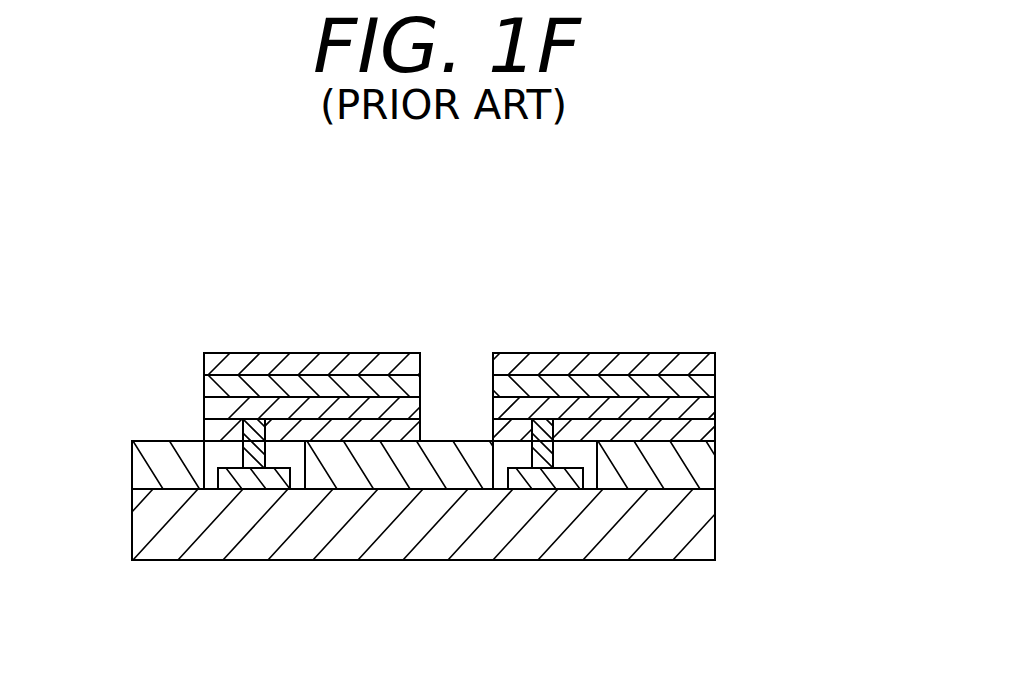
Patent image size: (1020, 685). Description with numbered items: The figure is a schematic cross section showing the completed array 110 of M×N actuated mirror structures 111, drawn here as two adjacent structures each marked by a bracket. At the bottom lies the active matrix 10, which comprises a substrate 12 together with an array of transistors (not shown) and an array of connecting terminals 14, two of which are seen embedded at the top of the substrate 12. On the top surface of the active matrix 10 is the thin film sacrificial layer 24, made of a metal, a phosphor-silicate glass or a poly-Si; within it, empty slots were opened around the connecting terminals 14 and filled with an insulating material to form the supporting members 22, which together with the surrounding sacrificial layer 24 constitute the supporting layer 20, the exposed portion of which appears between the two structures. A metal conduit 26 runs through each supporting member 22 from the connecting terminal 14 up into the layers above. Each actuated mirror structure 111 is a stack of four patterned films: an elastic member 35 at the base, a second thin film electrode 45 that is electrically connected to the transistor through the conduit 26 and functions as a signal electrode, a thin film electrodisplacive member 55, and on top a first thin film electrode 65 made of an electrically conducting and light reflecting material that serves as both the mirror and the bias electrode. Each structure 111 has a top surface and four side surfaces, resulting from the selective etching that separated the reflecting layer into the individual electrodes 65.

The array of actuated mirror structures 110 is at (760, 187).
The actuated mirror structure 111 is at (420, 232).
The active matrix 10 is at (118, 472).
The substrate 12 is at (382, 547).
The connecting terminal 14 is at (258, 482).
The supporting layer 20 is at (433, 465).
The supporting member 22 is at (285, 450).
The thin film sacrificial layer 24 is at (695, 460).
The conduit 26 is at (257, 430).
The elastic member 35 is at (700, 433).
The second thin film electrode 45 is at (702, 412).
The thin film electrodisplacive member 55 is at (705, 378).
The first thin film electrode 65 is at (692, 367).